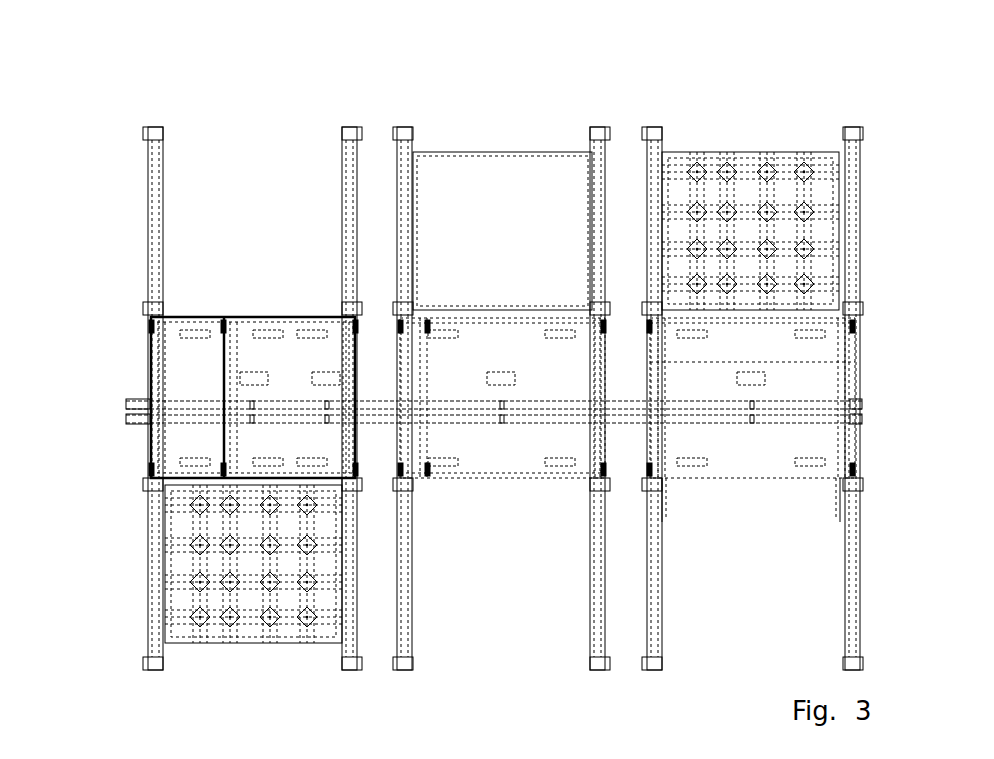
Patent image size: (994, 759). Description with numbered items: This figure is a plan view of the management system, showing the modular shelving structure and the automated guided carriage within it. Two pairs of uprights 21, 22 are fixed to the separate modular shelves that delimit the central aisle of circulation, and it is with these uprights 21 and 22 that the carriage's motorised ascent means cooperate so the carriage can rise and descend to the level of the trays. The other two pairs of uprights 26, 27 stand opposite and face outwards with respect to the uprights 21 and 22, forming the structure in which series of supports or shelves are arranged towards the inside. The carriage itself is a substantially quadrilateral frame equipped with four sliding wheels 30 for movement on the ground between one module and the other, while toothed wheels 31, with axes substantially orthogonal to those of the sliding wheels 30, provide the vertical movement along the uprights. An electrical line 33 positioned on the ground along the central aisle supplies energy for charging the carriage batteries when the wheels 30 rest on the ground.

The uprights 21 is at (150, 307).
The uprights 22 is at (150, 485).
The uprights 26 is at (150, 133).
The uprights 27 is at (150, 670).
The sliding wheels 30 is at (197, 333).
The toothed wheels 31 is at (150, 323).
The electrical line 33 is at (140, 405).